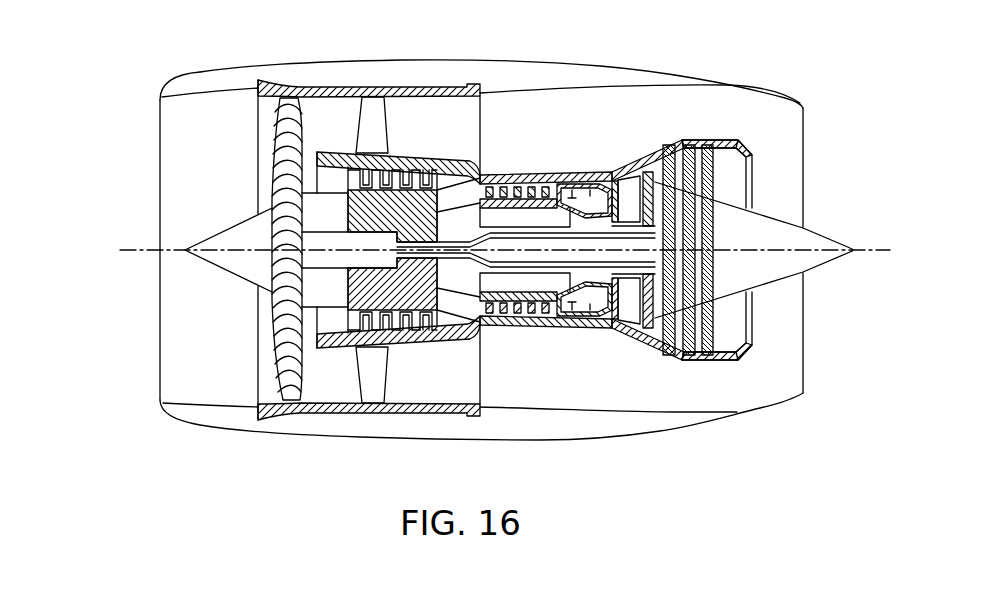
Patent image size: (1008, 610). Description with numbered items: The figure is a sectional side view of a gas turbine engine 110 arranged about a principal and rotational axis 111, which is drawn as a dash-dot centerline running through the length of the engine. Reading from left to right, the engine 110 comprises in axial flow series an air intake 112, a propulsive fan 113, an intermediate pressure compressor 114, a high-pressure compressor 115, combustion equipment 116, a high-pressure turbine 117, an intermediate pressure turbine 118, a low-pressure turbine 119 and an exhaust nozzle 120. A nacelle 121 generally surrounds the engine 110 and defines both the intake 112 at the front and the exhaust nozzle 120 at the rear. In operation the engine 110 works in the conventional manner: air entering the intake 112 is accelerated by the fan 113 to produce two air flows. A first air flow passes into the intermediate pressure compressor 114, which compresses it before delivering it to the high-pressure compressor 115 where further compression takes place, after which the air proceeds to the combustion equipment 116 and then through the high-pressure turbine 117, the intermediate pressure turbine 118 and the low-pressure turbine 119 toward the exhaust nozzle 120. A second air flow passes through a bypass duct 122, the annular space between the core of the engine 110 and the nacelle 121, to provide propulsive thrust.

The gas turbine engine 110 is at (128, 126).
The principal and rotational axis 111 is at (172, 251).
The air intake 112 is at (222, 90).
The propulsive fan 113 is at (277, 356).
The intermediate pressure compressor 114 is at (408, 332).
The high-pressure compressor 115 is at (512, 187).
The combustion equipment 116 is at (562, 323).
The high-pressure turbine 117 is at (613, 333).
The intermediate pressure turbine 118 is at (653, 168).
The low-pressure turbine 119 is at (673, 348).
The exhaust nozzle 120 is at (804, 374).
The nacelle 121 is at (630, 61).
The bypass duct 122 is at (460, 139).